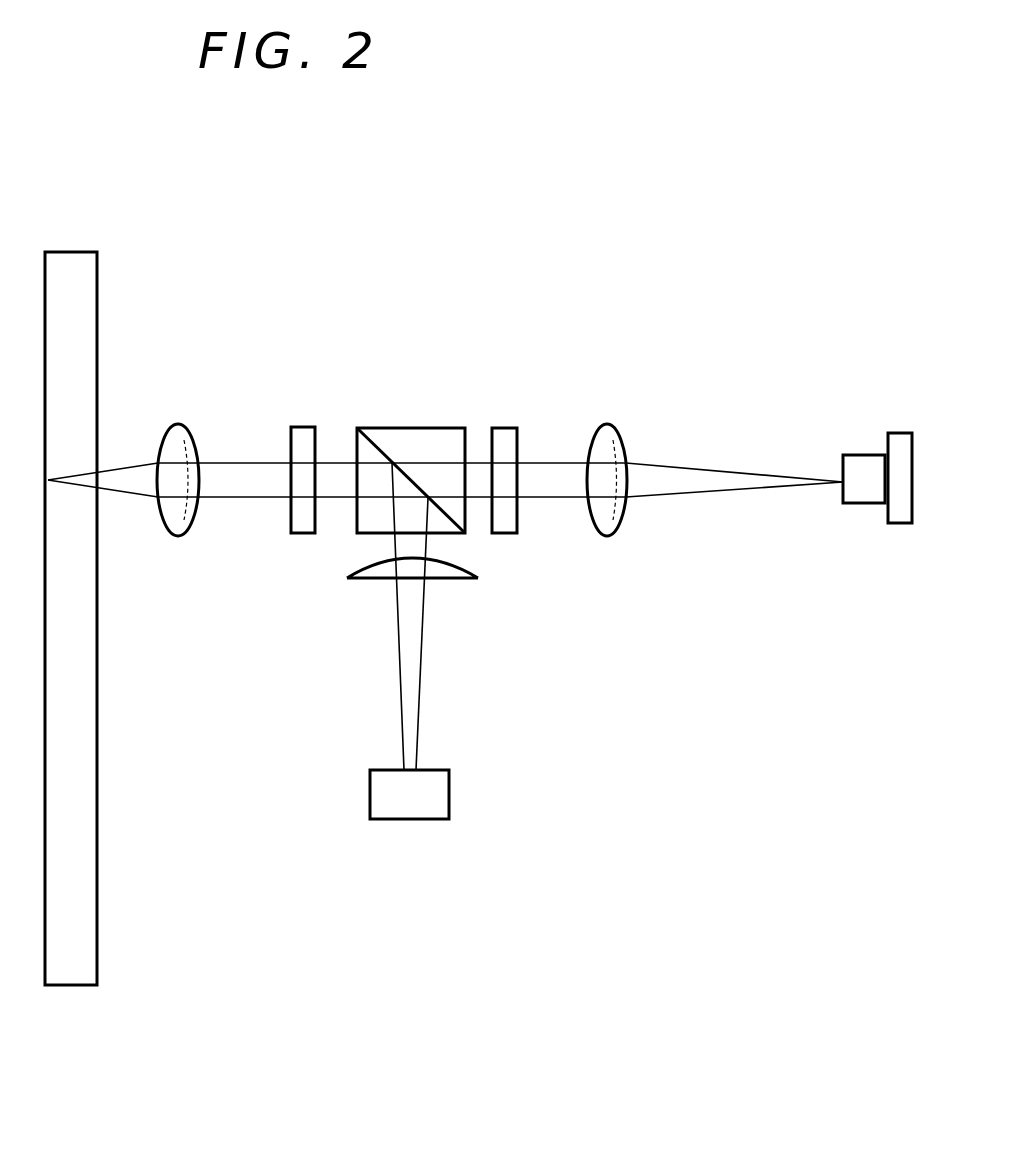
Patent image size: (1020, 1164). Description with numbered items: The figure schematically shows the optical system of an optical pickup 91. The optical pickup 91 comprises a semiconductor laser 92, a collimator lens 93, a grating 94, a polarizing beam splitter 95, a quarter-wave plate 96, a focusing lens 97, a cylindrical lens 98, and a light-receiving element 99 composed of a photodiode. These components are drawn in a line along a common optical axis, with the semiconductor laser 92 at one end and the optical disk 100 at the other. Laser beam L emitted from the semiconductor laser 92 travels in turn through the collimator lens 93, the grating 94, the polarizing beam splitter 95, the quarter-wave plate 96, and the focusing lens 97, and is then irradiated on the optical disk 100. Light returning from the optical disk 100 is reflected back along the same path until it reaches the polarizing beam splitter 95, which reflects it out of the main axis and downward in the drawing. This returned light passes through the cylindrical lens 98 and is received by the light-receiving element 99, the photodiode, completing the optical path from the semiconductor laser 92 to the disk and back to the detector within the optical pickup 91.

The optical pickup 91 is at (670, 257).
The semiconductor laser 92 is at (862, 455).
The collimator lens 93 is at (606, 425).
The grating 94 is at (505, 428).
The polarizing beam splitter 95 is at (411, 428).
The quarter-wave plate 96 is at (304, 427).
The focusing lens 97 is at (178, 425).
The cylindrical lens 98 is at (457, 580).
The light-receiving element 99 is at (450, 798).
The optical disk 100 is at (98, 945).
The laser beam L is at (400, 715).